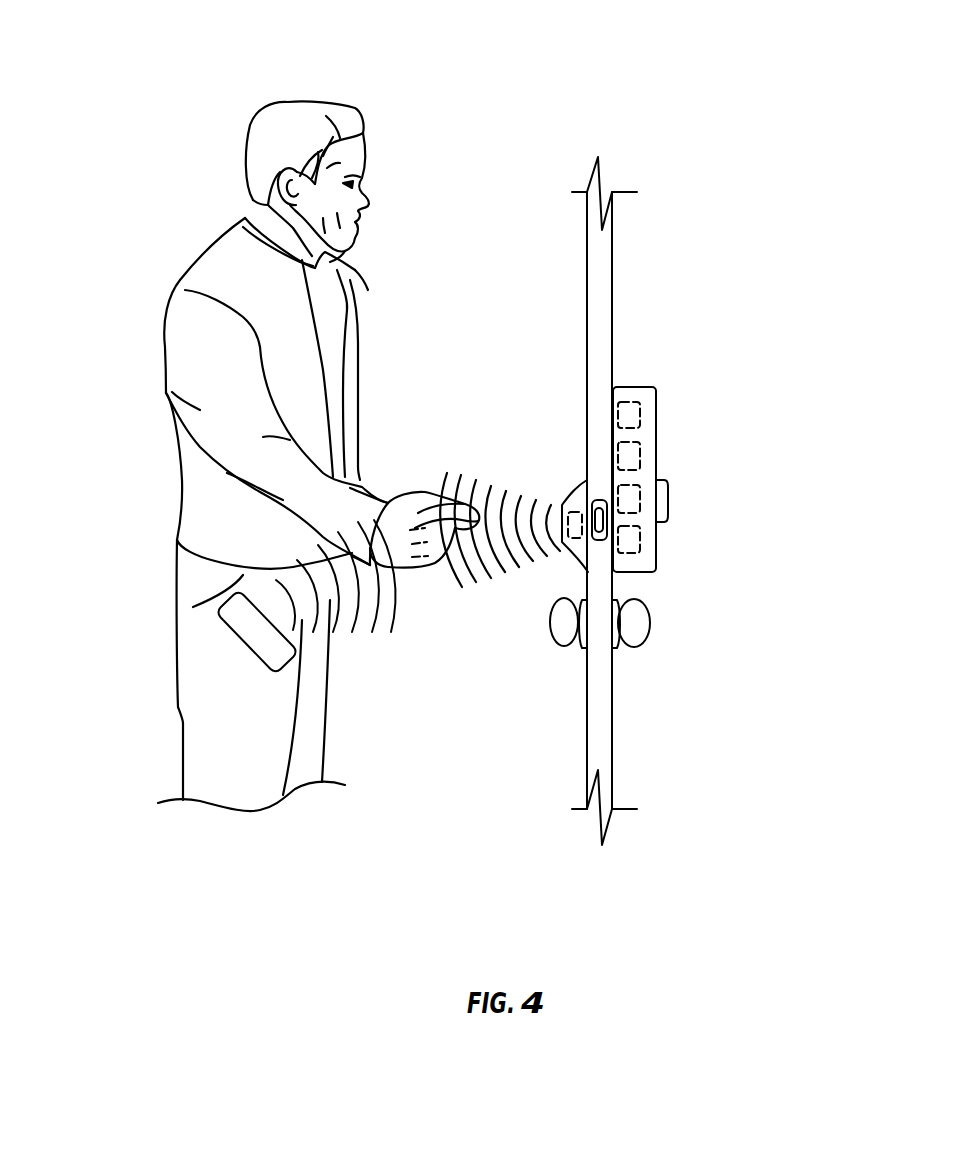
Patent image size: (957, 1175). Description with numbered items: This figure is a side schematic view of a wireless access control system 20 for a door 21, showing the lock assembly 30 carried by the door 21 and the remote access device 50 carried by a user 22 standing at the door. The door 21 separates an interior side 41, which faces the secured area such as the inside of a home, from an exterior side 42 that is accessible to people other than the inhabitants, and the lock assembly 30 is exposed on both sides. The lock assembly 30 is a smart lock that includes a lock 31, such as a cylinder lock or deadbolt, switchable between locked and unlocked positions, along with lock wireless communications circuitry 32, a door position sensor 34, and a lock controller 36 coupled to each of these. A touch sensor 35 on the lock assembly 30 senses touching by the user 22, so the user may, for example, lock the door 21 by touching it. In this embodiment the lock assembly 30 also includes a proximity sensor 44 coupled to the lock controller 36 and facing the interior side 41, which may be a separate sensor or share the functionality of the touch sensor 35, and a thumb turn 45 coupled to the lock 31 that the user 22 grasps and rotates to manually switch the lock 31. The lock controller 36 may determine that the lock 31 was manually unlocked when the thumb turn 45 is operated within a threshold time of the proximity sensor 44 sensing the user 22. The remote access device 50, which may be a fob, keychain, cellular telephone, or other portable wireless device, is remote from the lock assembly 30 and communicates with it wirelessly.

The wireless access control system 20 is at (484, 150).
The door 21 is at (603, 747).
The user 22 is at (187, 340).
The lock assembly 30 is at (640, 378).
The lock 31 is at (600, 542).
The lock wireless communications circuitry 32 is at (640, 514).
The door position sensor 34 is at (640, 410).
The touch sensor 35 is at (562, 495).
The lock controller 36 is at (642, 450).
The interior side 41 is at (729, 705).
The exterior side 42 is at (434, 727).
The proximity sensor 44 is at (640, 555).
The thumb turn 45 is at (669, 499).
The remote access device 50 is at (259, 670).